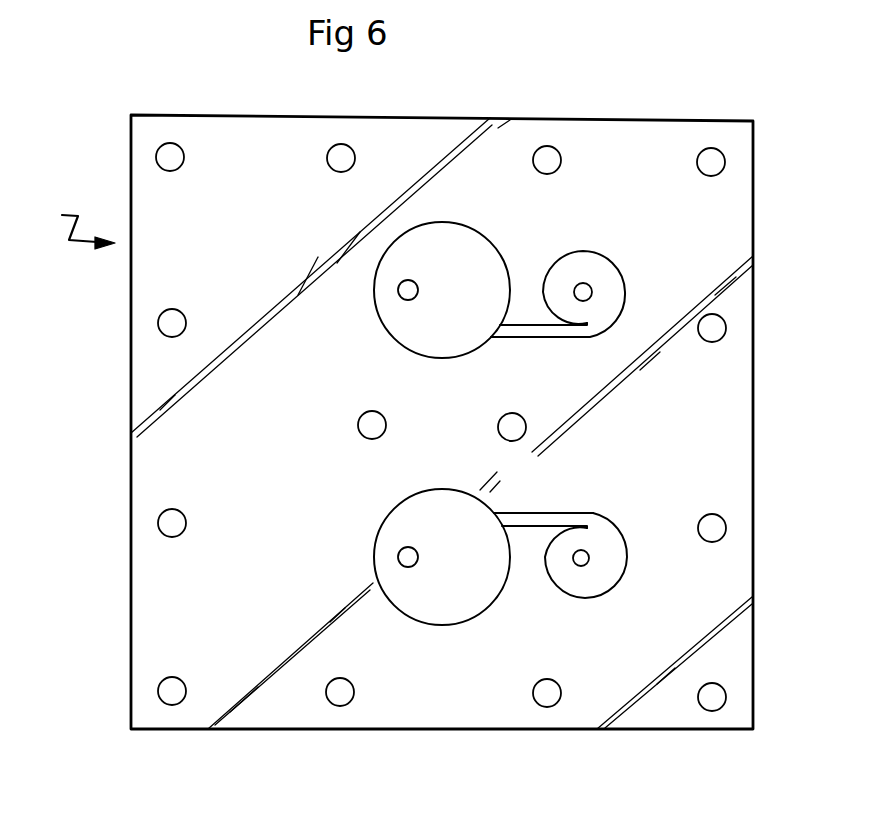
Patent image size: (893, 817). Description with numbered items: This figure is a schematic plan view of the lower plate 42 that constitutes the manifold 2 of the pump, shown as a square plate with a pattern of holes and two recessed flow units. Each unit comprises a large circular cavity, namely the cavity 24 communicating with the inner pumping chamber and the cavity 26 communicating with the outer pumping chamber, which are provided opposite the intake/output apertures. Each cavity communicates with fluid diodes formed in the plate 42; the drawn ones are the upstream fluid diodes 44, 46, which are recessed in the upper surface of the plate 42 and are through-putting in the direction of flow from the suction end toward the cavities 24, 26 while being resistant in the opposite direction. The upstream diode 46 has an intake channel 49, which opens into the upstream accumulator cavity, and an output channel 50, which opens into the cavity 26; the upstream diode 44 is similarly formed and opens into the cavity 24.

The manifold 2 is at (78, 223).
The cavity 24 is at (433, 237).
The cavity 26 is at (468, 595).
The lower plate 42 is at (730, 226).
The upstream fluid diode 44 is at (590, 263).
The upstream fluid diode 46 is at (605, 577).
The intake channel 49 is at (581, 558).
The output channel 50 is at (557, 512).